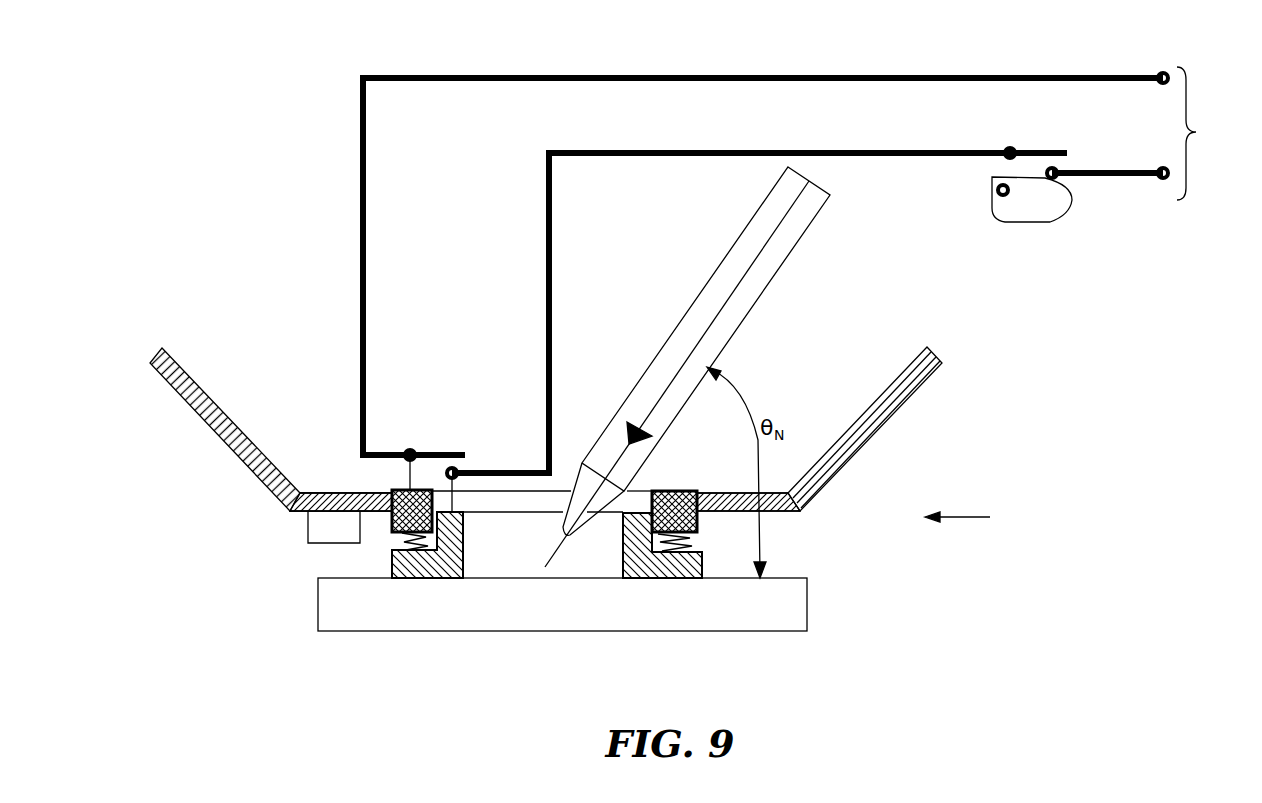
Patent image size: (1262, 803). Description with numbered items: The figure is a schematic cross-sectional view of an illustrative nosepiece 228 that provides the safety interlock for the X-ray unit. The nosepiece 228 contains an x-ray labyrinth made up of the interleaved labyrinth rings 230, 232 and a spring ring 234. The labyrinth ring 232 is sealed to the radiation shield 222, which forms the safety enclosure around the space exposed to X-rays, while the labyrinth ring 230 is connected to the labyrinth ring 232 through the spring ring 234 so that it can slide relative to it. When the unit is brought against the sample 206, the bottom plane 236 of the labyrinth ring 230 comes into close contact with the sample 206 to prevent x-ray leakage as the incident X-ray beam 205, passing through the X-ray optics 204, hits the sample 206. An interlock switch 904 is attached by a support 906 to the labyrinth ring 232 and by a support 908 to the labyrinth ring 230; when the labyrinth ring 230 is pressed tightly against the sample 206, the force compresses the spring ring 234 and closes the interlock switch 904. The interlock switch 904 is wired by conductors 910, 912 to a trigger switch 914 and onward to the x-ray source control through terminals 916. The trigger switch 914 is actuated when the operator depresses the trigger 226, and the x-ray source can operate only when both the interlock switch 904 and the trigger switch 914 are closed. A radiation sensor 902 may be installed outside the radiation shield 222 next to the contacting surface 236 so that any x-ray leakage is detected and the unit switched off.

The X-ray optics 204 is at (785, 263).
The incident X-ray beam 205 is at (550, 550).
The sample surface 206 is at (367, 605).
The radiation shield 222 is at (195, 410).
The operation trigger 226 is at (1034, 213).
The nosepiece 228 is at (1006, 528).
The labyrinth ring 230 is at (393, 565).
The labyrinth ring 232 is at (677, 490).
The spring ring 234 is at (692, 538).
The bottom plane 236 is at (672, 576).
The radiation sensor 902 is at (327, 523).
The interlock switch 904 is at (439, 442).
The support 906 is at (407, 473).
The support 908 is at (462, 470).
The conductor 910 is at (358, 262).
The conductor 912 is at (553, 263).
The trigger switch 914 is at (1046, 138).
The terminals 916 is at (1149, 133).